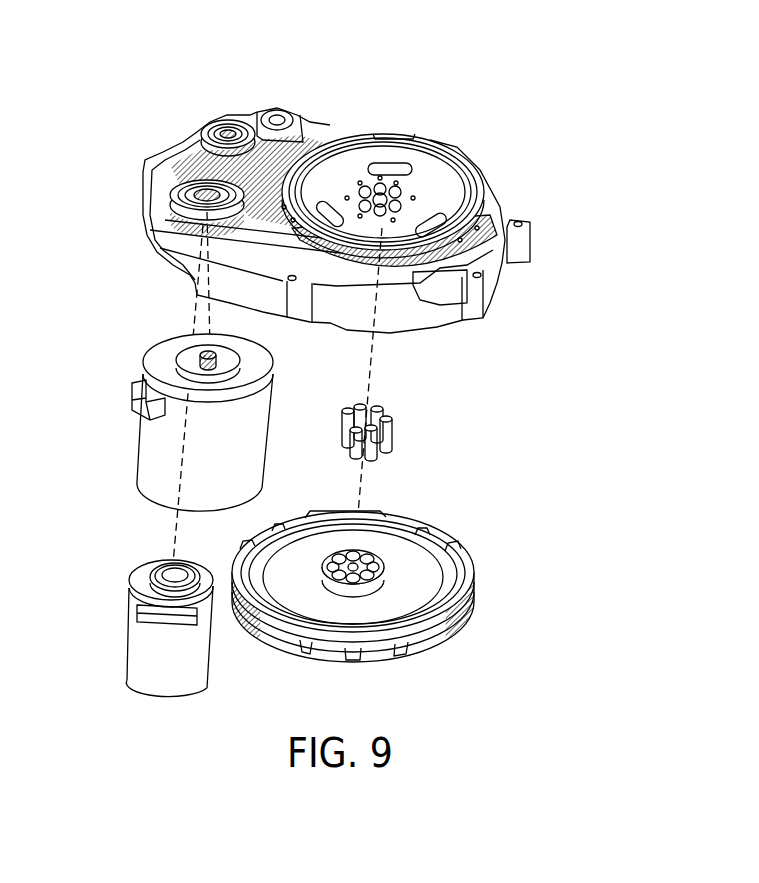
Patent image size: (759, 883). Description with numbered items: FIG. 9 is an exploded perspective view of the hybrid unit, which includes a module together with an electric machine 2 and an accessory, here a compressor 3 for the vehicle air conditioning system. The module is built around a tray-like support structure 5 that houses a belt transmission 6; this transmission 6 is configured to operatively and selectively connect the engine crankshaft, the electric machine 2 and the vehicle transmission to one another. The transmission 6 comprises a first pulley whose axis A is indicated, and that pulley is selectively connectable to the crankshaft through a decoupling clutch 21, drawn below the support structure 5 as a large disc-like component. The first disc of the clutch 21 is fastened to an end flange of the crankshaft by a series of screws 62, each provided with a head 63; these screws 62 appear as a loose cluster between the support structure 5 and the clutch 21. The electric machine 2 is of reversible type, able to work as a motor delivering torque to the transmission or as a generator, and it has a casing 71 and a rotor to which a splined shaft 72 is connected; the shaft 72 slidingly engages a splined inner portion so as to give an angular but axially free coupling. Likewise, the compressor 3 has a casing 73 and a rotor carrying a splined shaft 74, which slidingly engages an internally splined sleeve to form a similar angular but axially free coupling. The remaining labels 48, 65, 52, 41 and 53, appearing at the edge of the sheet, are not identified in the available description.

The transmission 6 is at (192, 127).
The support structure 5 is at (533, 235).
The electric machine 2 is at (263, 424).
The casing 71 is at (150, 465).
The splined shaft 72 is at (216, 357).
The compressor 3 is at (114, 624).
The casing 73 is at (137, 658).
The splined shaft 74 is at (165, 568).
The screws 62 is at (425, 431).
The heads 63 is at (380, 412).
The decoupling clutch 21 is at (405, 658).
The component 48 is at (0, 32).
The axis A is at (0, 80).
The component 65 is at (0, 158).
The component 52 is at (0, 205).
The component 41 is at (0, 253).
The component 53 is at (5, 302).